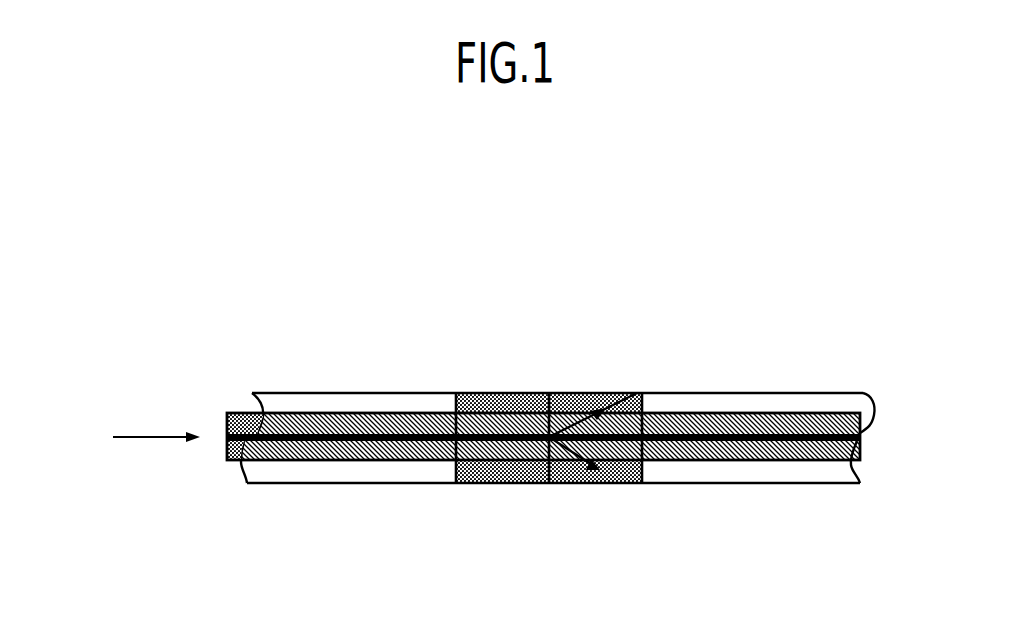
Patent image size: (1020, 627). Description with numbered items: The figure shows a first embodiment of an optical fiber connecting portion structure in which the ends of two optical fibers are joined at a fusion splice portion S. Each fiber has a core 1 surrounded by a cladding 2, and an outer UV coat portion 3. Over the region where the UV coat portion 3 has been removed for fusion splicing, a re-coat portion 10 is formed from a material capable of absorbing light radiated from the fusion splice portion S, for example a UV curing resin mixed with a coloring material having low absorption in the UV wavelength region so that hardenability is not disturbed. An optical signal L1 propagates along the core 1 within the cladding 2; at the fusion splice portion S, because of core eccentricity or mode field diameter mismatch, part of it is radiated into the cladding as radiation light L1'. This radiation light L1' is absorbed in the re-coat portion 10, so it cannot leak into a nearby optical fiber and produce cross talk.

The core 1 is at (220, 438).
The cladding 2 is at (240, 413).
The UV coat portion 3 is at (339, 400).
The re-coat portion 10 is at (498, 402).
The fusion splice portion S is at (552, 412).
The optical signal L1 is at (156, 425).
The radiation light L1' is at (630, 407).